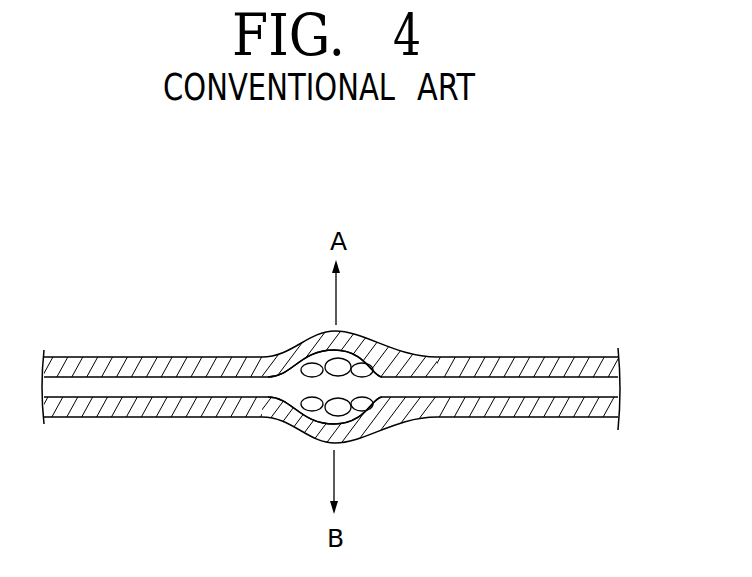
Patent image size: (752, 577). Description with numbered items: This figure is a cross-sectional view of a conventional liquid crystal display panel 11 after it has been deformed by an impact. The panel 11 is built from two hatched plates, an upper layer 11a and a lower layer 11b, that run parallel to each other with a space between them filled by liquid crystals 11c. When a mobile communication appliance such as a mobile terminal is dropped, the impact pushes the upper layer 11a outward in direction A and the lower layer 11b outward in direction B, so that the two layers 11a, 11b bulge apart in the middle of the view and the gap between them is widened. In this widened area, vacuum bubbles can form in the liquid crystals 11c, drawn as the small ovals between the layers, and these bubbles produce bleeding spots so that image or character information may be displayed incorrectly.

The liquid crystal display panel 11 is at (343, 371).
The upper layer 11a is at (198, 367).
The lower layer 11b is at (508, 413).
The liquid crystals 11c is at (547, 390).